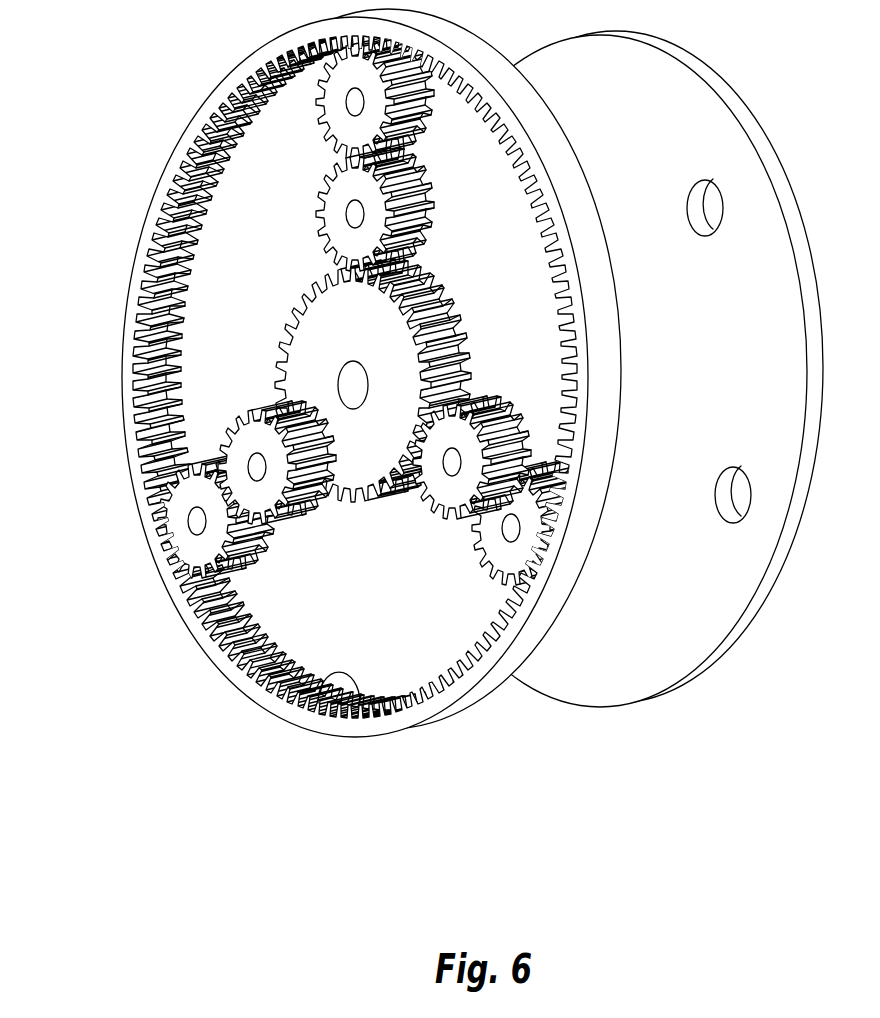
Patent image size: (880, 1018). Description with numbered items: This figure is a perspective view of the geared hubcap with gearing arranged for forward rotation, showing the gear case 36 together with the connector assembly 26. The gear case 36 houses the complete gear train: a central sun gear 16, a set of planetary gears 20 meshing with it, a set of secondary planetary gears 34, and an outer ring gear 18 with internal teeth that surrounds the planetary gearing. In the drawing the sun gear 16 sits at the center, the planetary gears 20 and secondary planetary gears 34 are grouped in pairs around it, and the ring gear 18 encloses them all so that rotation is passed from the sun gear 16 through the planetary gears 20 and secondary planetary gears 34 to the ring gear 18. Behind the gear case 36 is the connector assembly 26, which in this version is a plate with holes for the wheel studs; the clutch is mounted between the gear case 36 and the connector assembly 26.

The sun gear 16 is at (303, 338).
The ring gear 18 is at (306, 712).
The planetary gears 20 is at (440, 513).
The connector assembly 26 is at (704, 625).
The secondary planetary gears 34 is at (493, 563).
The gear case 36 is at (461, 712).